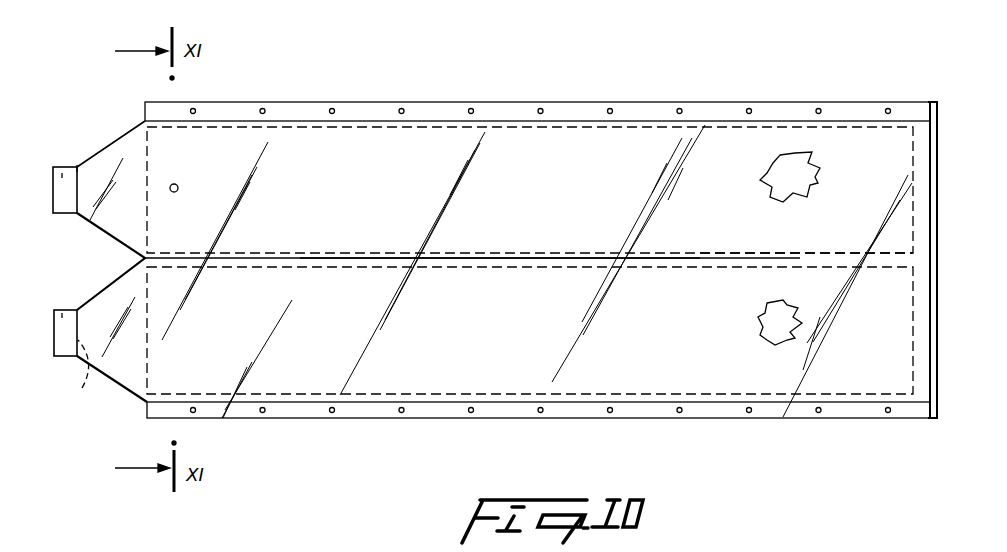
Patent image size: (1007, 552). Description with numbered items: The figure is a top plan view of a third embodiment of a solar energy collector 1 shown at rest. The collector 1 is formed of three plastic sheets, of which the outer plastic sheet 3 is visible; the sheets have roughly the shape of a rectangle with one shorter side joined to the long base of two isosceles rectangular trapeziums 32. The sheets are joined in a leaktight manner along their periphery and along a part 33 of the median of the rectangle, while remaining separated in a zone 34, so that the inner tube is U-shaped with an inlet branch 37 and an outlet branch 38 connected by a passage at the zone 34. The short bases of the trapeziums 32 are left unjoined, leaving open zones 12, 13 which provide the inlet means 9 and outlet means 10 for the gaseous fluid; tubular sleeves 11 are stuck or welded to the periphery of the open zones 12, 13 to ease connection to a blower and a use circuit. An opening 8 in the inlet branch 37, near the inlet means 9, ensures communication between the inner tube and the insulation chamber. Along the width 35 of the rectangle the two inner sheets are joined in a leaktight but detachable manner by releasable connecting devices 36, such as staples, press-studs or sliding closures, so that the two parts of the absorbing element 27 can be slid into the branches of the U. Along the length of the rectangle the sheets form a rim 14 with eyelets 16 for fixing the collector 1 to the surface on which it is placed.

The solar energy collector 1 is at (650, 96).
The plastic sheet 3 is at (548, 147).
The opening 8 is at (180, 185).
The inlet means 9 is at (53, 192).
The outlet means 10 is at (54, 330).
The tubular sleeve 11 is at (62, 173).
The open zone 12 is at (77, 167).
The open zone 13 is at (75, 379).
The rim 14 is at (443, 108).
The eyelet 16 is at (402, 110).
The absorbing element 27 is at (790, 172).
The isosceles rectangular trapezium 32 is at (124, 147).
The part of the median 33 is at (488, 257).
The zone 34 is at (830, 253).
The width of the rectangle 35 is at (936, 268).
The releasable connecting device 36 is at (937, 402).
The inlet branch 37 is at (327, 148).
The outlet branch 38 is at (387, 358).